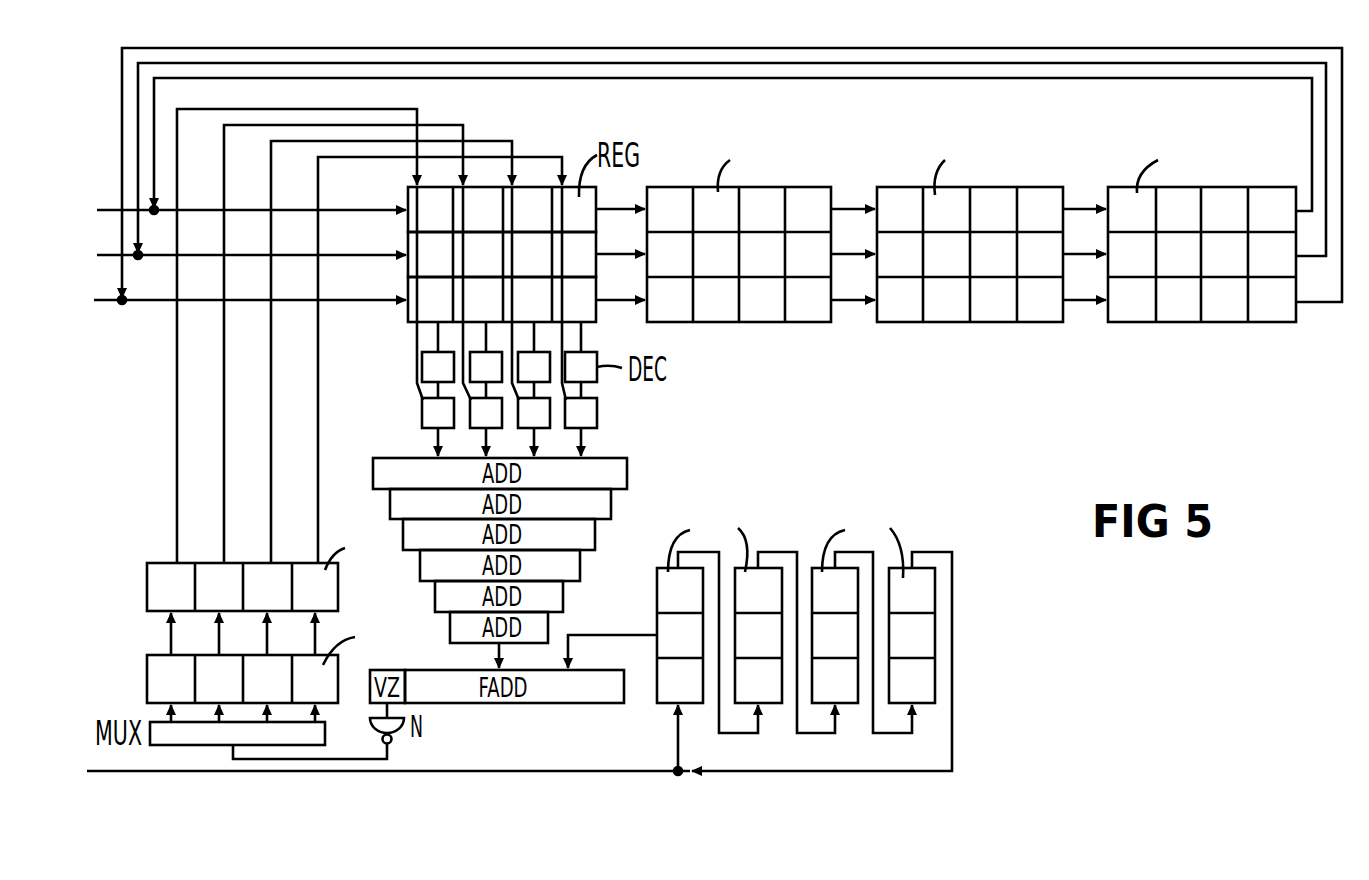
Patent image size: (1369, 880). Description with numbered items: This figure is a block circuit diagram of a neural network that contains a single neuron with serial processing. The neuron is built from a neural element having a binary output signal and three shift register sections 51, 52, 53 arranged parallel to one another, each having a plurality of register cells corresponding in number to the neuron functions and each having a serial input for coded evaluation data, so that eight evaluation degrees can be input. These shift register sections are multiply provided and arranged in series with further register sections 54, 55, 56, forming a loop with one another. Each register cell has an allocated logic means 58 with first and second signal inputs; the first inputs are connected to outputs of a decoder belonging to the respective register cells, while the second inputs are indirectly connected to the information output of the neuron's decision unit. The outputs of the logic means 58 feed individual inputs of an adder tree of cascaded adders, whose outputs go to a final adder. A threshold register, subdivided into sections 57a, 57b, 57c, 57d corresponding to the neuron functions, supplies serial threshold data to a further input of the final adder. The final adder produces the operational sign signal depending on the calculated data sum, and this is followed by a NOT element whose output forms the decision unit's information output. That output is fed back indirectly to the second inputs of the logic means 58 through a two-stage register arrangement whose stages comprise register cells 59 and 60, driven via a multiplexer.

The shift register section 51 is at (407, 200).
The shift register section 52 is at (421, 247).
The shift register section 53 is at (426, 294).
The register section 54 is at (770, 188).
The register section 55 is at (1003, 188).
The register section 56 is at (1228, 192).
The threshold register section 57a is at (665, 697).
The threshold register section 57b is at (770, 697).
The threshold register section 57c is at (847, 697).
The threshold register section 57d is at (925, 697).
The logic means 58 is at (597, 413).
The register cells 59 is at (146, 682).
The register cells 60 is at (146, 590).